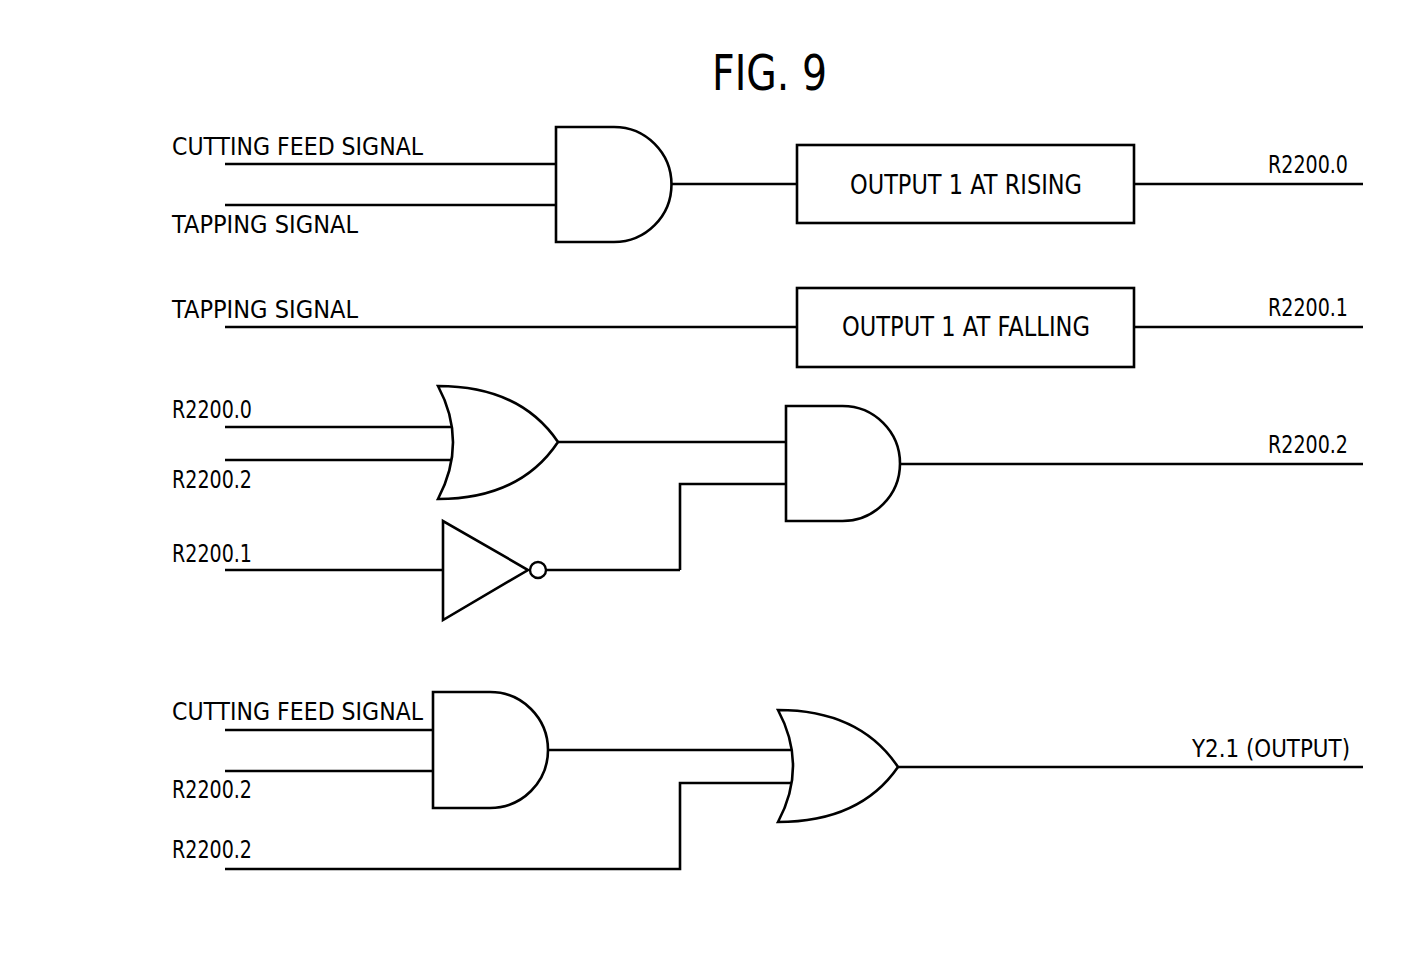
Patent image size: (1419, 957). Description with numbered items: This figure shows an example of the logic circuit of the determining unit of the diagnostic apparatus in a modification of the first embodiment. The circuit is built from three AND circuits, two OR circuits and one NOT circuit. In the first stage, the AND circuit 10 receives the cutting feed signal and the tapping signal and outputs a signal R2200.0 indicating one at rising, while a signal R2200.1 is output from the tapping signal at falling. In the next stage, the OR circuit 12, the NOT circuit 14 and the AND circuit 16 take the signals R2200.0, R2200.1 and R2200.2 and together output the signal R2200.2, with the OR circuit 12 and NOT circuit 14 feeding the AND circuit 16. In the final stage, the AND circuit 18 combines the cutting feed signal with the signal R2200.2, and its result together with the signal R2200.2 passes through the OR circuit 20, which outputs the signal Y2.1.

The AND circuit 10 is at (588, 127).
The OR circuit 12 is at (522, 400).
The NOT circuit 14 is at (500, 553).
The AND circuit 16 is at (900, 443).
The AND circuit 18 is at (485, 692).
The OR circuit 20 is at (840, 719).